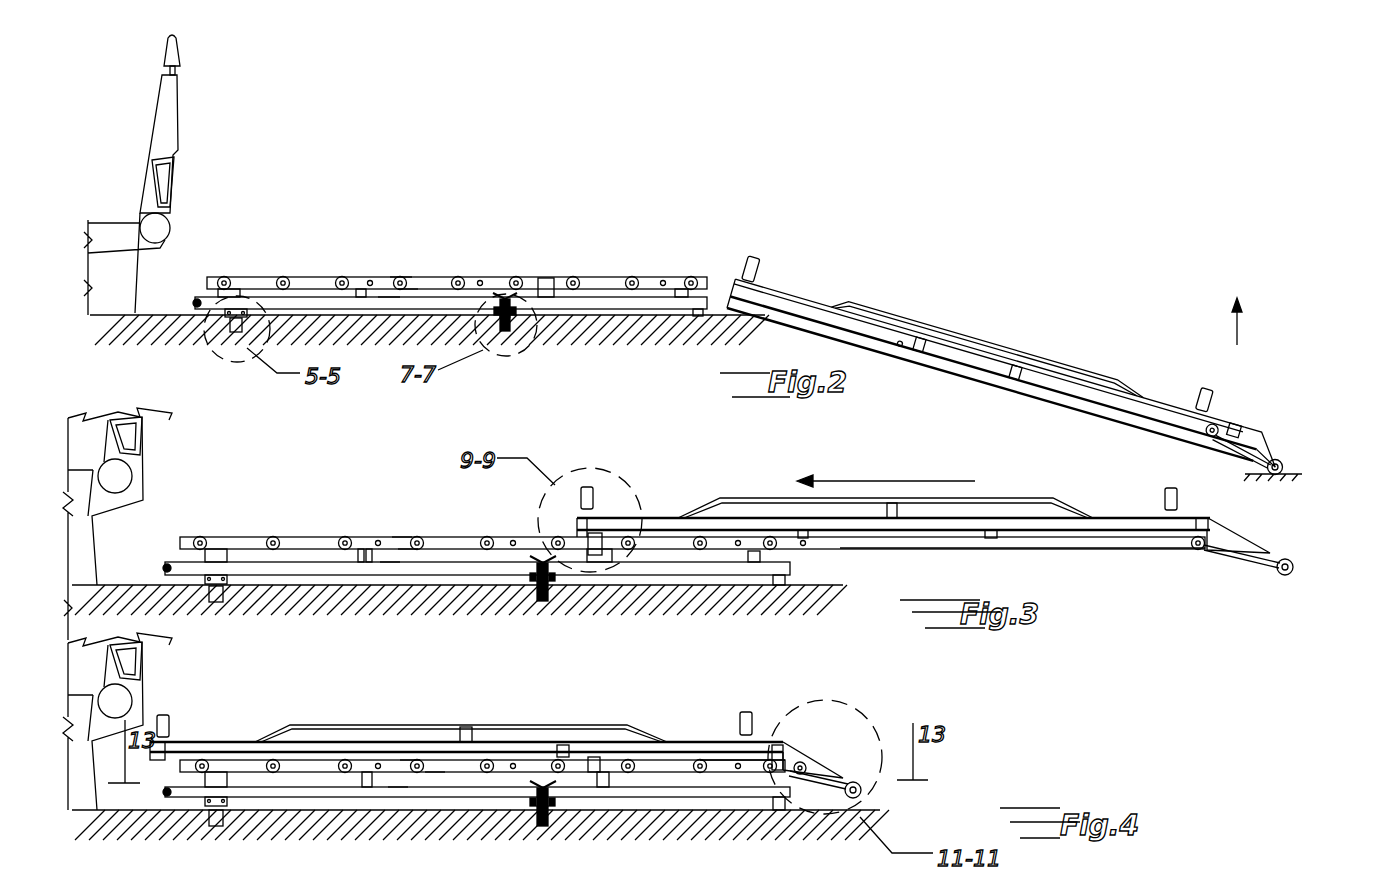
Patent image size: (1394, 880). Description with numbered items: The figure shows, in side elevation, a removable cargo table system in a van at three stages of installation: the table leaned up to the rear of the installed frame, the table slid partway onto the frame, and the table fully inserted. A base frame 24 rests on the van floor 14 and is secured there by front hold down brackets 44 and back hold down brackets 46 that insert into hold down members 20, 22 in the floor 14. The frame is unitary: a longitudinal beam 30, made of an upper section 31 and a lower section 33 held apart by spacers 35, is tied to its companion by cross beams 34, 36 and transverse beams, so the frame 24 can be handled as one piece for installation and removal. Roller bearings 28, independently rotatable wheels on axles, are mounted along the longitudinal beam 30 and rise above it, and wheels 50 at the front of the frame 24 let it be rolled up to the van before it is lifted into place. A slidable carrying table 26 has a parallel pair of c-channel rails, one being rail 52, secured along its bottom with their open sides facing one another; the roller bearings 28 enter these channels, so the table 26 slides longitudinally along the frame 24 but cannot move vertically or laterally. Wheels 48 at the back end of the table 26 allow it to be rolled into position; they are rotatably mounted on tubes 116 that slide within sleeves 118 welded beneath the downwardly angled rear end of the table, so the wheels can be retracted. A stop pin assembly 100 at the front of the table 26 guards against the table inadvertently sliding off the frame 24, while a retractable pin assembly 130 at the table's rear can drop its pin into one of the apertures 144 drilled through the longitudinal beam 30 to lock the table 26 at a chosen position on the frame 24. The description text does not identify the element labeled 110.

In FIG. 2, the floor 14 is at (172, 312).
In FIG. 3, the floor 14 is at (142, 583).
In FIG. 4, the floor 14 is at (140, 813).
In FIG. 2, the hold down member 20 is at (216, 342).
In FIG. 3, the hold down member 20 is at (224, 603).
In FIG. 4, the hold down member 20 is at (224, 822).
In FIG. 2, the hold down member 22 is at (508, 331).
In FIG. 3, the hold down member 22 is at (542, 605).
In FIG. 4, the hold down member 22 is at (545, 824).
In FIG. 2, the base frame 24 is at (568, 259).
In FIG. 3, the base frame 24 is at (272, 535).
In FIG. 4, the base frame 24 is at (246, 743).
In FIG. 2, the slidable carrying table 26 is at (881, 293).
In FIG. 3, the slidable carrying table 26 is at (748, 496).
In FIG. 4, the slidable carrying table 26 is at (550, 724).
In FIG. 2, the roller bearings 28 is at (340, 278).
In FIG. 3, the roller bearings 28 is at (293, 537).
In FIG. 4, the roller bearings 28 is at (279, 759).
In FIG. 2, the longitudinal beam 30 is at (399, 275).
In FIG. 3, the longitudinal beam 30 is at (403, 535).
In FIG. 4, the longitudinal beam 30 is at (410, 758).
In FIG. 2, the upper section 31 is at (407, 287).
In FIG. 3, the upper section 31 is at (409, 536).
In FIG. 4, the upper section 31 is at (436, 771).
In FIG. 2, the lower section 33 is at (388, 296).
In FIG. 3, the lower section 33 is at (390, 561).
In FIG. 4, the lower section 33 is at (398, 786).
In FIG. 2, the cross beam 34 is at (358, 288).
In FIG. 3, the cross beam 34 is at (368, 548).
In FIG. 4, the cross beam 34 is at (375, 758).
In FIG. 2, the spacers 35 is at (238, 288).
In FIG. 3, the spacers 35 is at (215, 537).
In FIG. 4, the spacers 35 is at (241, 758).
In FIG. 2, the cross beam 36 is at (700, 317).
In FIG. 3, the cross beam 36 is at (788, 587).
In FIG. 4, the cross beam 36 is at (785, 810).
In FIG. 2, the front hold down bracket 44 is at (248, 340).
In FIG. 3, the front hold down bracket 44 is at (226, 595).
In FIG. 4, the front hold down bracket 44 is at (226, 818).
In FIG. 2, the back hold down bracket 46 is at (501, 343).
In FIG. 3, the back hold down bracket 46 is at (532, 608).
In FIG. 4, the back hold down bracket 46 is at (533, 834).
In FIG. 2, the wheels 48 is at (1264, 468).
In FIG. 3, the wheels 48 is at (1281, 577).
In FIG. 4, the wheels 48 is at (848, 783).
In FIG. 2, the wheels 50 is at (191, 300).
In FIG. 3, the wheels 50 is at (163, 567).
In FIG. 4, the wheels 50 is at (161, 792).
In FIG. 2, the c-channel rail 52 is at (927, 353).
In FIG. 3, the c-channel rail 52 is at (1098, 550).
In FIG. 4, the c-channel rail 52 is at (718, 755).
In FIG. 2, the stop pin assembly 100 is at (746, 258).
In FIG. 3, the stop pin assembly 100 is at (587, 485).
In FIG. 4, the stop pin assembly 100 is at (163, 714).
In FIG. 2, the latch 110 is at (553, 277).
In FIG. 3, the latch 110 is at (604, 533).
In FIG. 4, the latch 110 is at (597, 758).
In FIG. 2, the tubes 116 is at (1240, 450).
In FIG. 3, the tubes 116 is at (1258, 562).
In FIG. 4, the tubes 116 is at (814, 777).
In FIG. 2, the sleeves 118 is at (1210, 437).
In FIG. 3, the sleeves 118 is at (1227, 557).
In FIG. 4, the sleeves 118 is at (803, 760).
In FIG. 2, the retractable pin assembly 130 is at (899, 344).
In FIG. 3, the retractable pin assembly 130 is at (805, 547).
In FIG. 2, the apertures 144 is at (370, 280).
In FIG. 3, the apertures 144 is at (378, 540).
In FIG. 4, the apertures 144 is at (385, 762).